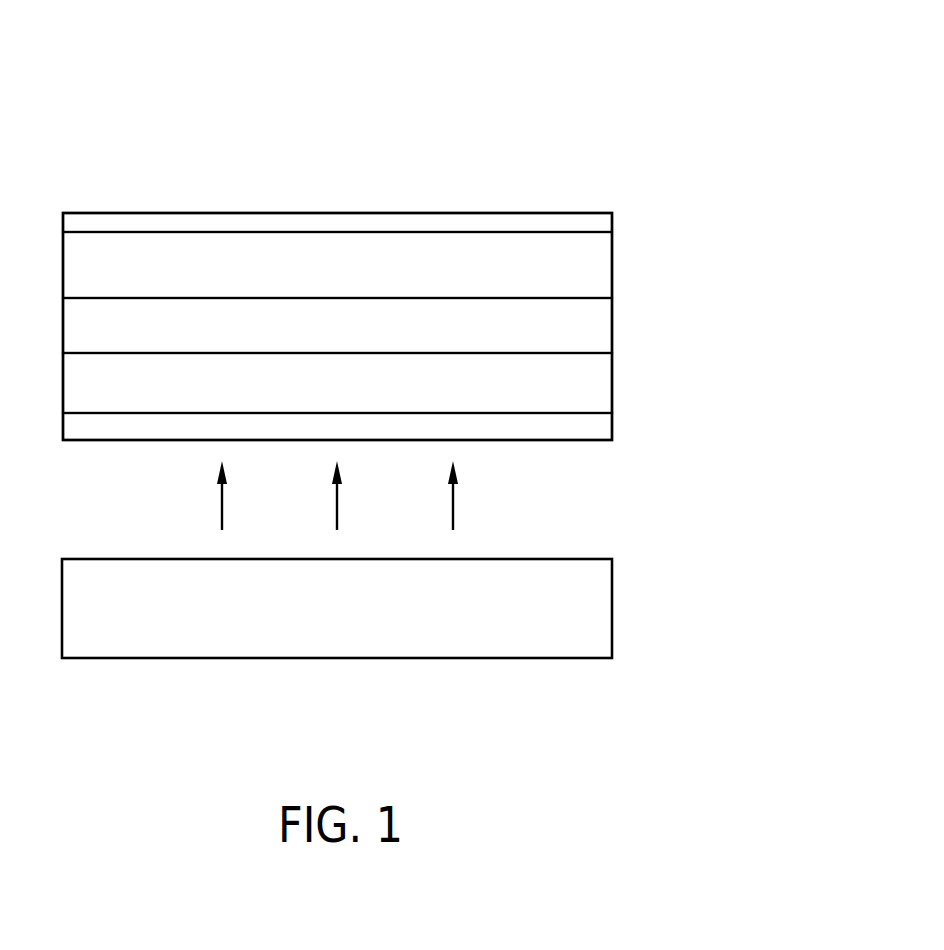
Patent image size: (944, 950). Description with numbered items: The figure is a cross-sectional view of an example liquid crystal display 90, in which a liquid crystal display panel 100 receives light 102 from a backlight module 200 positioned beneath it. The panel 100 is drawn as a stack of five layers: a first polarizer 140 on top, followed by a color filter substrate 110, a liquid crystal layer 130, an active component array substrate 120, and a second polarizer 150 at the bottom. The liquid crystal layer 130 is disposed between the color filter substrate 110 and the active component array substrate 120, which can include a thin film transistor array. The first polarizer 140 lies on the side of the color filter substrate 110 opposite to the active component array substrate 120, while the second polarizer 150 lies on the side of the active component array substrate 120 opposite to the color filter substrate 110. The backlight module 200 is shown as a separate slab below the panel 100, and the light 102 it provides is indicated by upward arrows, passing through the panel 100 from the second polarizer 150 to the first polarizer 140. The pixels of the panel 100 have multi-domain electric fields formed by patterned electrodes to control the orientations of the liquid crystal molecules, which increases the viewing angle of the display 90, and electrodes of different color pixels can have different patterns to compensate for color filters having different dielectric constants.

The liquid crystal display 90 is at (805, 121).
The liquid crystal display panel 100 is at (772, 213).
The first polarizer 140 is at (598, 220).
The color filter substrate 110 is at (598, 263).
The liquid crystal layer 130 is at (598, 322).
The active component array substrate 120 is at (598, 378).
The second polarizer 150 is at (598, 433).
The light 102 is at (460, 505).
The backlight module 200 is at (597, 607).